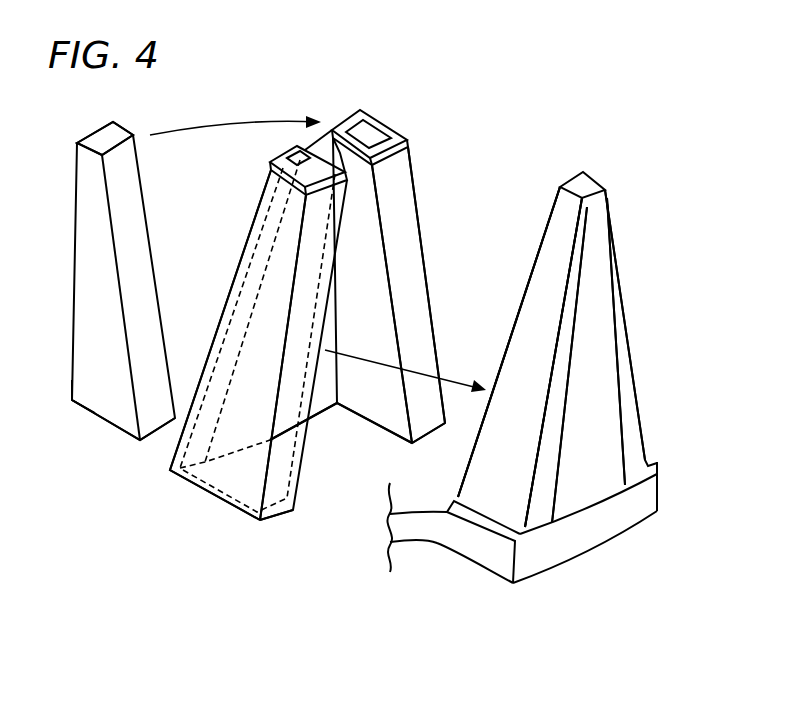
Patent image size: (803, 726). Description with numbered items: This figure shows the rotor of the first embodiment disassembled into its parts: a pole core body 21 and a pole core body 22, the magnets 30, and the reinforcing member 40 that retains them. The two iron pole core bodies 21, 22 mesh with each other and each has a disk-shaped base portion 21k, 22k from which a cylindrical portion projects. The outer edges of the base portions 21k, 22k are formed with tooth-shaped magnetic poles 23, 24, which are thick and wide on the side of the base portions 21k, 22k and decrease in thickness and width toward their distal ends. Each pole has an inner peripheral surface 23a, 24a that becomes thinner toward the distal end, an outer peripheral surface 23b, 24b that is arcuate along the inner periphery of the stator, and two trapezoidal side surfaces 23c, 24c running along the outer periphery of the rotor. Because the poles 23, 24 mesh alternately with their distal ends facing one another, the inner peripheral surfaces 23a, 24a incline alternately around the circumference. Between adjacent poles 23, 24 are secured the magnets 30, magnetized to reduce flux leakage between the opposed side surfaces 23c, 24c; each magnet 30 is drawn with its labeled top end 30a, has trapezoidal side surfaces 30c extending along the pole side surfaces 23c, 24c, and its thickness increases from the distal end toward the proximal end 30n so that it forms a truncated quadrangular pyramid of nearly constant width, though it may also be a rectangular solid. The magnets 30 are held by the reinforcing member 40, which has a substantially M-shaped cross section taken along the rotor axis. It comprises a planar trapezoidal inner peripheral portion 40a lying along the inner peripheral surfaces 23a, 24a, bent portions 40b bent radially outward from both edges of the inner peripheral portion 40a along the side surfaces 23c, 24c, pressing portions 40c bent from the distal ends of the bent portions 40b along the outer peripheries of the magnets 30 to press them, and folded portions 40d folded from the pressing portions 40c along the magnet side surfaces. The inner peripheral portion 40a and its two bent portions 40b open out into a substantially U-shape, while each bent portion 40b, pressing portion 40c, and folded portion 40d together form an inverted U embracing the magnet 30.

The first pole core body 21 is at (548, 525).
The second pole core body 22 is at (607, 550).
The base portion 21k is at (419, 550).
The base portion 22k is at (412, 537).
The tooth-shaped magnetic pole 23 is at (597, 349).
The tooth-shaped magnetic pole 24 is at (630, 355).
The inner peripheral surface 23a is at (520, 357).
The inner peripheral surface 24a is at (558, 234).
The outer peripheral surface 23b is at (670, 337).
The outer peripheral surface 24b is at (605, 293).
The side surface 23c is at (588, 357).
The side surface 24c is at (527, 327).
The magnet 30 is at (156, 209).
The top end of core pin 30a is at (145, 171).
The side surface 30c is at (88, 402).
The proximal end 30n is at (122, 432).
The reinforcing member 40 is at (230, 261).
The inner peripheral portion 40a is at (323, 407).
The bent portion 40b is at (280, 486).
The pressing portion 40c is at (277, 520).
The folded portion 40d is at (200, 495).